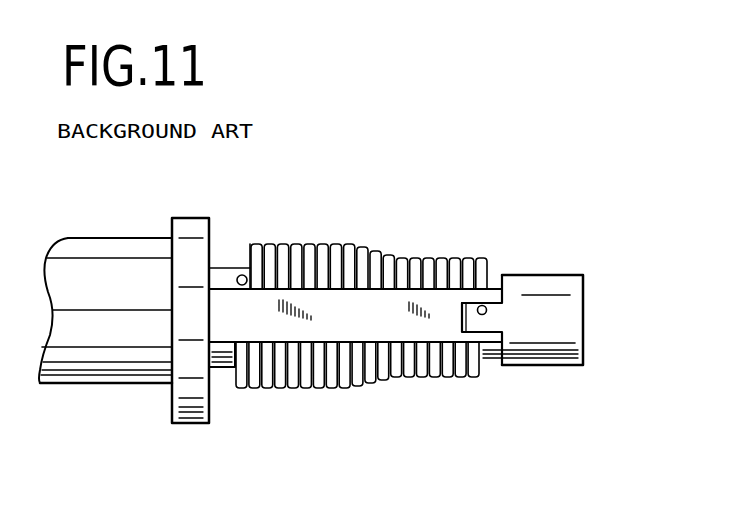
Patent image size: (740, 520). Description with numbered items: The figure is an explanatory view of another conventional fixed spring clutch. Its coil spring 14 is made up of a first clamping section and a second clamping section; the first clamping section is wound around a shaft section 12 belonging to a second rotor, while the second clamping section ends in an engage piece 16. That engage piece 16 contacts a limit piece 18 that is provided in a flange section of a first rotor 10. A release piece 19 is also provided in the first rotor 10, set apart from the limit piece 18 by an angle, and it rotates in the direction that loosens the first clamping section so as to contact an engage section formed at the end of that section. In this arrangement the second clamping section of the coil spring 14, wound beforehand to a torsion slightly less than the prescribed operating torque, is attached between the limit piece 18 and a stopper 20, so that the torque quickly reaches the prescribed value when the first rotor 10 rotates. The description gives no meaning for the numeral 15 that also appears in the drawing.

The first rotor 10 is at (107, 373).
The shaft section 12 is at (562, 277).
The coil spring 14 is at (353, 246).
The seal ring 15 is at (487, 312).
The engage piece 16 is at (246, 277).
The limit piece 18 is at (226, 302).
The release piece 19 is at (500, 337).
The stopper 20 is at (497, 297).